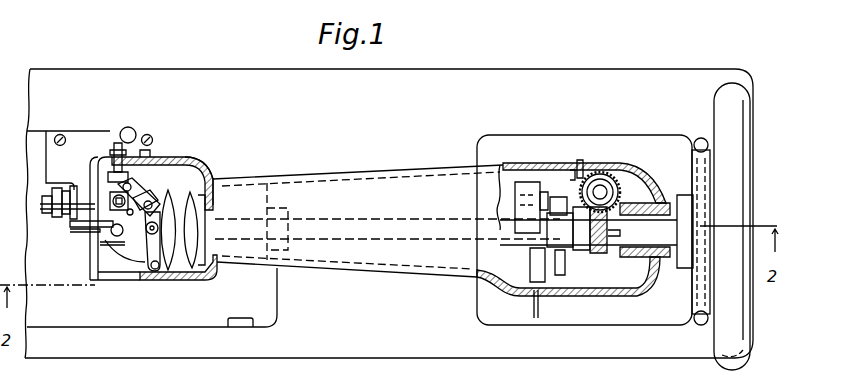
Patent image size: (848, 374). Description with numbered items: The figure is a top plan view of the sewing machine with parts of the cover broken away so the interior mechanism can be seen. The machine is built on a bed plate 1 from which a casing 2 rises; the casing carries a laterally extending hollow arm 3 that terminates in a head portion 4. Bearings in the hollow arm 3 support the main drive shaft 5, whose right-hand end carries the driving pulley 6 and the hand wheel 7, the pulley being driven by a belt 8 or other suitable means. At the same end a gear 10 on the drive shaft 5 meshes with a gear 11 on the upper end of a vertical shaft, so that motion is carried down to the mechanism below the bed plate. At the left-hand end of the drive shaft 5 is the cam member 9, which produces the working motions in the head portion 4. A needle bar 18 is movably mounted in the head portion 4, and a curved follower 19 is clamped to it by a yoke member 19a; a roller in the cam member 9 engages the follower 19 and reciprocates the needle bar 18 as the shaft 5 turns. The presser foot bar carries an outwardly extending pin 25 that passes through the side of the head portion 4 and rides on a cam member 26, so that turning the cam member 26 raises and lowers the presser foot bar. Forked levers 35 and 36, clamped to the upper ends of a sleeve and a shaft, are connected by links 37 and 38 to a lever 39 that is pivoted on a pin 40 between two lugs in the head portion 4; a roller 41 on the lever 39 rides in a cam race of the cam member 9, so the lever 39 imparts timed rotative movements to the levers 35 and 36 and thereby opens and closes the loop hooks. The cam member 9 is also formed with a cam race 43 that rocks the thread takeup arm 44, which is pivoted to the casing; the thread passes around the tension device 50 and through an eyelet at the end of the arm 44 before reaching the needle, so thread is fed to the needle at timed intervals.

The bed plate 1 is at (389, 213).
The casing 2 is at (530, 137).
The hollow arm 3 is at (357, 177).
The head portion 4 is at (205, 281).
The main drive shaft 5 is at (385, 221).
The driving pulley 6 is at (694, 144).
The hand wheel 7 is at (720, 94).
The belt 8 is at (701, 137).
The cam member 9 is at (197, 232).
The gear 10 is at (598, 254).
The gear 11 is at (603, 188).
The needle bar 18 is at (112, 233).
The curved follower 19 is at (130, 250).
The yoke member 19a is at (105, 246).
The pin 25 is at (116, 148).
The cam member 26 is at (148, 150).
The forked lever 35 is at (112, 192).
The forked lever 36 is at (70, 224).
The link 37 is at (138, 188).
The link 38 is at (150, 196).
The lever 39 is at (173, 219).
The pin 40 is at (154, 273).
The roller 41 is at (158, 226).
The cam race 43 is at (200, 172).
The thread takeup arm 44 is at (165, 281).
The tension device 50 is at (56, 190).